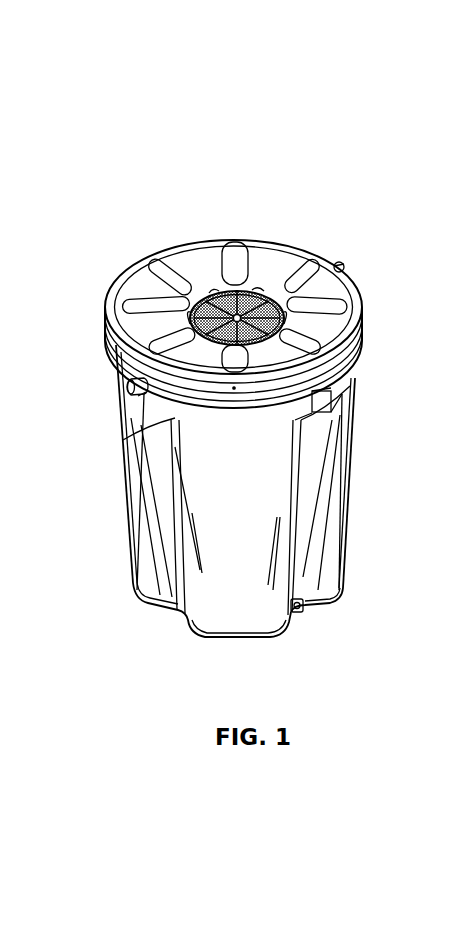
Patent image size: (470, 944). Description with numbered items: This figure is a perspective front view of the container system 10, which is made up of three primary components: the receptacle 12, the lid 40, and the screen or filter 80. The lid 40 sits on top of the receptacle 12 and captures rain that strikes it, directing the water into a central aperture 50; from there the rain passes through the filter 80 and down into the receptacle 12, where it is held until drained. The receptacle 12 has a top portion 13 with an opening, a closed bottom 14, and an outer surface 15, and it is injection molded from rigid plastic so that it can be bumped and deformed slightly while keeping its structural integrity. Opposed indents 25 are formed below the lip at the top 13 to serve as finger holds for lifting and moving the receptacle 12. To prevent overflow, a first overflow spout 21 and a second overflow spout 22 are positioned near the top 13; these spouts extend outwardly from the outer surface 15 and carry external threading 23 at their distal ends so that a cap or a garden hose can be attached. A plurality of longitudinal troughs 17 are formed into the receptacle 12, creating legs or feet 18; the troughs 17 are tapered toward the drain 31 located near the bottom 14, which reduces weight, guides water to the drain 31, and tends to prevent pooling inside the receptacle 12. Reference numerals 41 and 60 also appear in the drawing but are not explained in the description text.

The container system 10 is at (374, 200).
The receptacle 12 is at (357, 392).
The top portion 13 is at (80, 338).
The closed bottom 14 is at (208, 638).
The outer surface 15 is at (345, 443).
The longitudinal troughs 17 is at (315, 495).
The legs or feet 18 is at (342, 553).
The first overflow spout 21 is at (118, 392).
The second overflow spout 22 is at (360, 257).
The external threading 23 is at (140, 398).
The opposed indents 25 is at (327, 413).
The drain 31 is at (306, 624).
The lid 40 is at (172, 233).
The lid top surface 41 is at (277, 248).
The central aperture 50 is at (217, 286).
The vent slots 60 is at (122, 297).
The screen or filter 80 is at (350, 312).